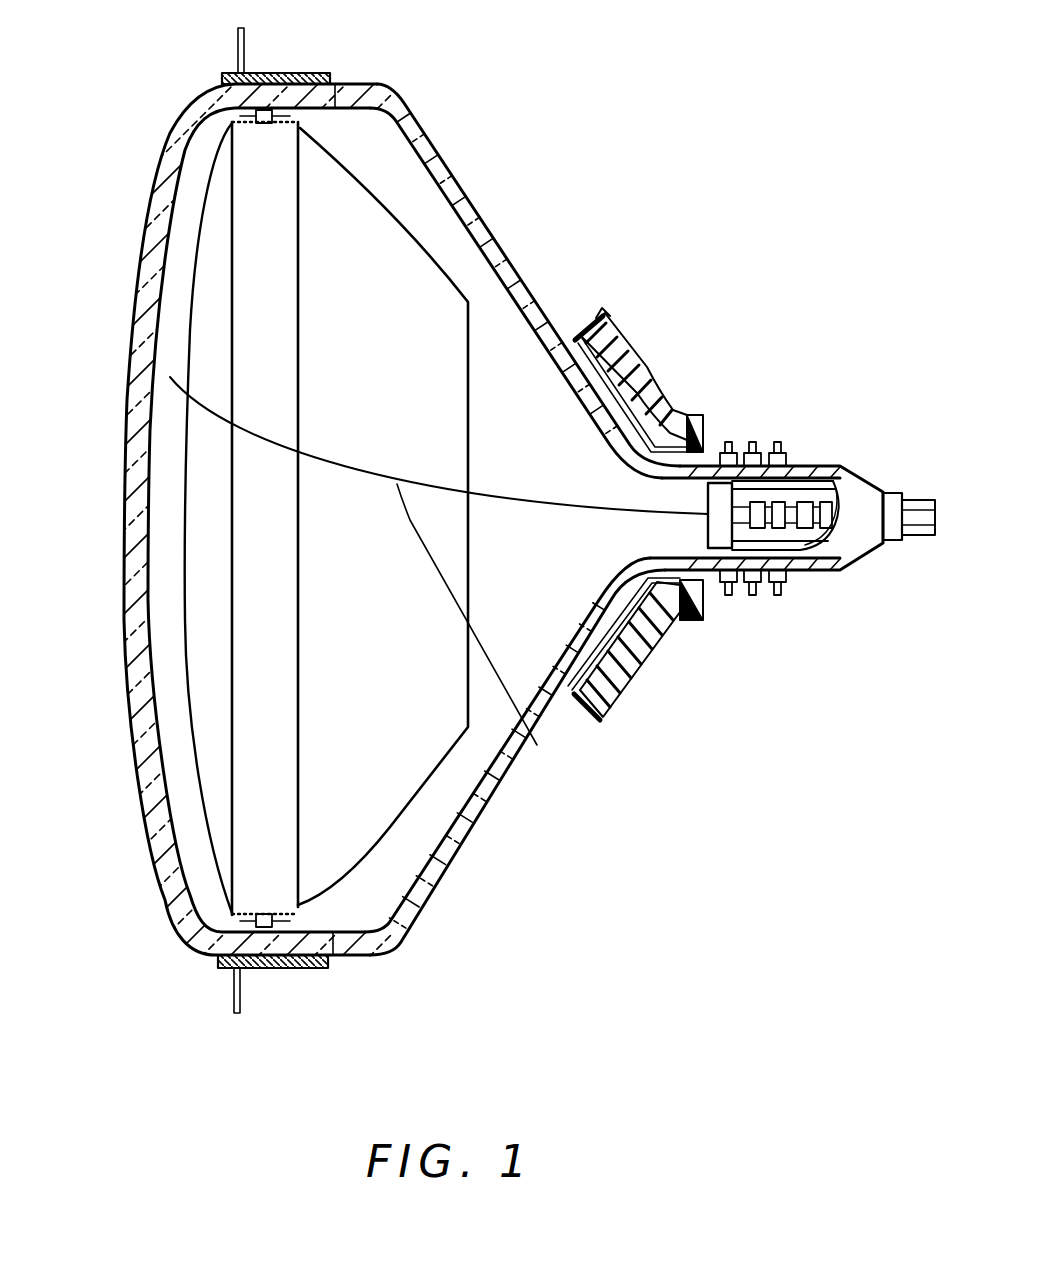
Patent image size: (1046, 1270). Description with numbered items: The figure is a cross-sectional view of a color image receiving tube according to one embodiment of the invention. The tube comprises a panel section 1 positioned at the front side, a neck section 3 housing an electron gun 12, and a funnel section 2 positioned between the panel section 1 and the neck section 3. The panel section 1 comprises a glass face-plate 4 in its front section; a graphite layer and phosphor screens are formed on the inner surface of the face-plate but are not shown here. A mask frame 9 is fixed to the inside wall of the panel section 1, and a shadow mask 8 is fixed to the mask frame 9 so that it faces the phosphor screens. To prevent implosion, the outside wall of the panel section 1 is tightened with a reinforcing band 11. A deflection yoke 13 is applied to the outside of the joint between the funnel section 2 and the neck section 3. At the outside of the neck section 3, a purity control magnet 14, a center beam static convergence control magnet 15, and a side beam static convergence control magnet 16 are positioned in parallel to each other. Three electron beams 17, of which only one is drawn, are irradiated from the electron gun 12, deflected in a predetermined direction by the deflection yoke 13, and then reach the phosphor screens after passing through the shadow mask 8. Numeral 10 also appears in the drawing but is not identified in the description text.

The panel section 1 is at (220, 83).
The funnel section 2 is at (453, 170).
The neck section 3 is at (808, 463).
The glass face-plate 4 is at (143, 226).
The shadow mask 8 is at (197, 690).
The mask frame 9 is at (240, 875).
The inner magnetic shield 10 is at (392, 827).
The reinforcing band 11 is at (287, 74).
The electron gun 12 is at (767, 530).
The deflection yoke 13 is at (628, 362).
The purity control magnet 14 is at (778, 596).
The center beam static convergence control magnet 15 is at (752, 596).
The side beam static convergence control magnet 16 is at (728, 596).
The electron beams 17 is at (537, 745).